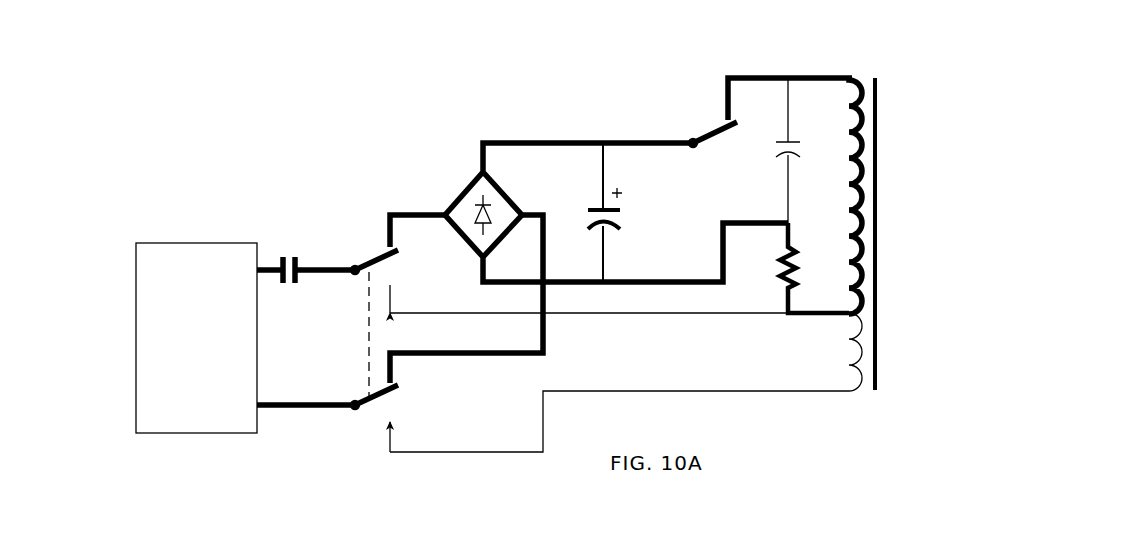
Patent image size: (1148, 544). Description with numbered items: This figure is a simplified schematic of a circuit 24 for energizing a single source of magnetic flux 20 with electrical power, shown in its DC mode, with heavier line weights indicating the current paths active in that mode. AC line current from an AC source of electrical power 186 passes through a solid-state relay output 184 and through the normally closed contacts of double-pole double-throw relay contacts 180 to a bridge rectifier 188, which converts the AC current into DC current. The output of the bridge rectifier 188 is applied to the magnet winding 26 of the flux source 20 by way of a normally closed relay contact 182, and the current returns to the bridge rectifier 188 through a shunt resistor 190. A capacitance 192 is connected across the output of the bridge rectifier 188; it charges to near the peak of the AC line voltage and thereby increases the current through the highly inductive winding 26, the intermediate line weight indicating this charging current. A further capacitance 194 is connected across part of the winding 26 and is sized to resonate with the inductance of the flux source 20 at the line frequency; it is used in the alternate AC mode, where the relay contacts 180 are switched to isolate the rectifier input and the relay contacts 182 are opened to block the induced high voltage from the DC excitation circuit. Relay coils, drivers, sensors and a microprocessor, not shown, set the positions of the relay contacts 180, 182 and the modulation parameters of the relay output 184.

The source of magnetic flux 20 is at (883, 172).
The power supply circuit 24 is at (100, 153).
The magnet winding 26 is at (852, 66).
The double-pole double-throw relay contacts 180 is at (364, 244).
The high-voltage normally closed relay contacts 182 is at (706, 124).
The solid-state relay output 184 is at (280, 236).
The AC source of electrical power 186 is at (210, 243).
The bridge rectifier 188 is at (450, 192).
The shunt resistor 190 is at (785, 286).
The capacitance 192 is at (592, 208).
The capacitance 194 is at (780, 140).